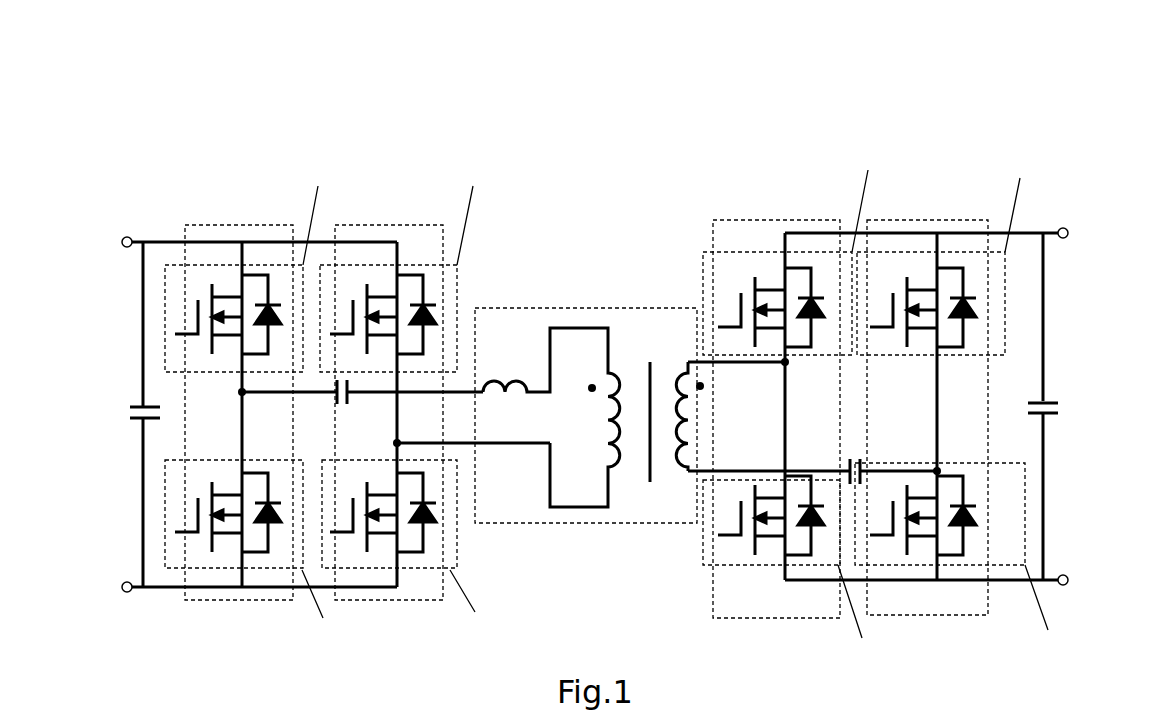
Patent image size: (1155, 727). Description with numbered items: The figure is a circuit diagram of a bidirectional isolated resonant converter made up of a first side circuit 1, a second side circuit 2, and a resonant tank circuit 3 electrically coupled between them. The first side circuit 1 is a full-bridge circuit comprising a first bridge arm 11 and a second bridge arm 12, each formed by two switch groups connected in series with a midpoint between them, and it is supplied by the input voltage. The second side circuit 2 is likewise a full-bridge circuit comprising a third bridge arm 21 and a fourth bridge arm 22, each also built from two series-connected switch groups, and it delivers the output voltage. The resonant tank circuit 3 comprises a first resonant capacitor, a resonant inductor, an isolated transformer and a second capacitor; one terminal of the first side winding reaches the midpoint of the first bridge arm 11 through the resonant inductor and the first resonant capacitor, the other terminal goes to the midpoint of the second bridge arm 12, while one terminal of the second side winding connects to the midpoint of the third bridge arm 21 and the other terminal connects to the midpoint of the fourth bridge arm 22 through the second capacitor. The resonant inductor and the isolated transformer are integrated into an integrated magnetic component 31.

The first side circuit 1 is at (408, 127).
The second side circuit 2 is at (967, 130).
The resonant tank circuit 3 is at (559, 208).
The first bridge arm 11 is at (215, 211).
The second bridge arm 12 is at (396, 211).
The third bridge arm 21 is at (767, 207).
The fourth bridge arm 22 is at (929, 207).
The integrated magnetic component 31 is at (515, 308).